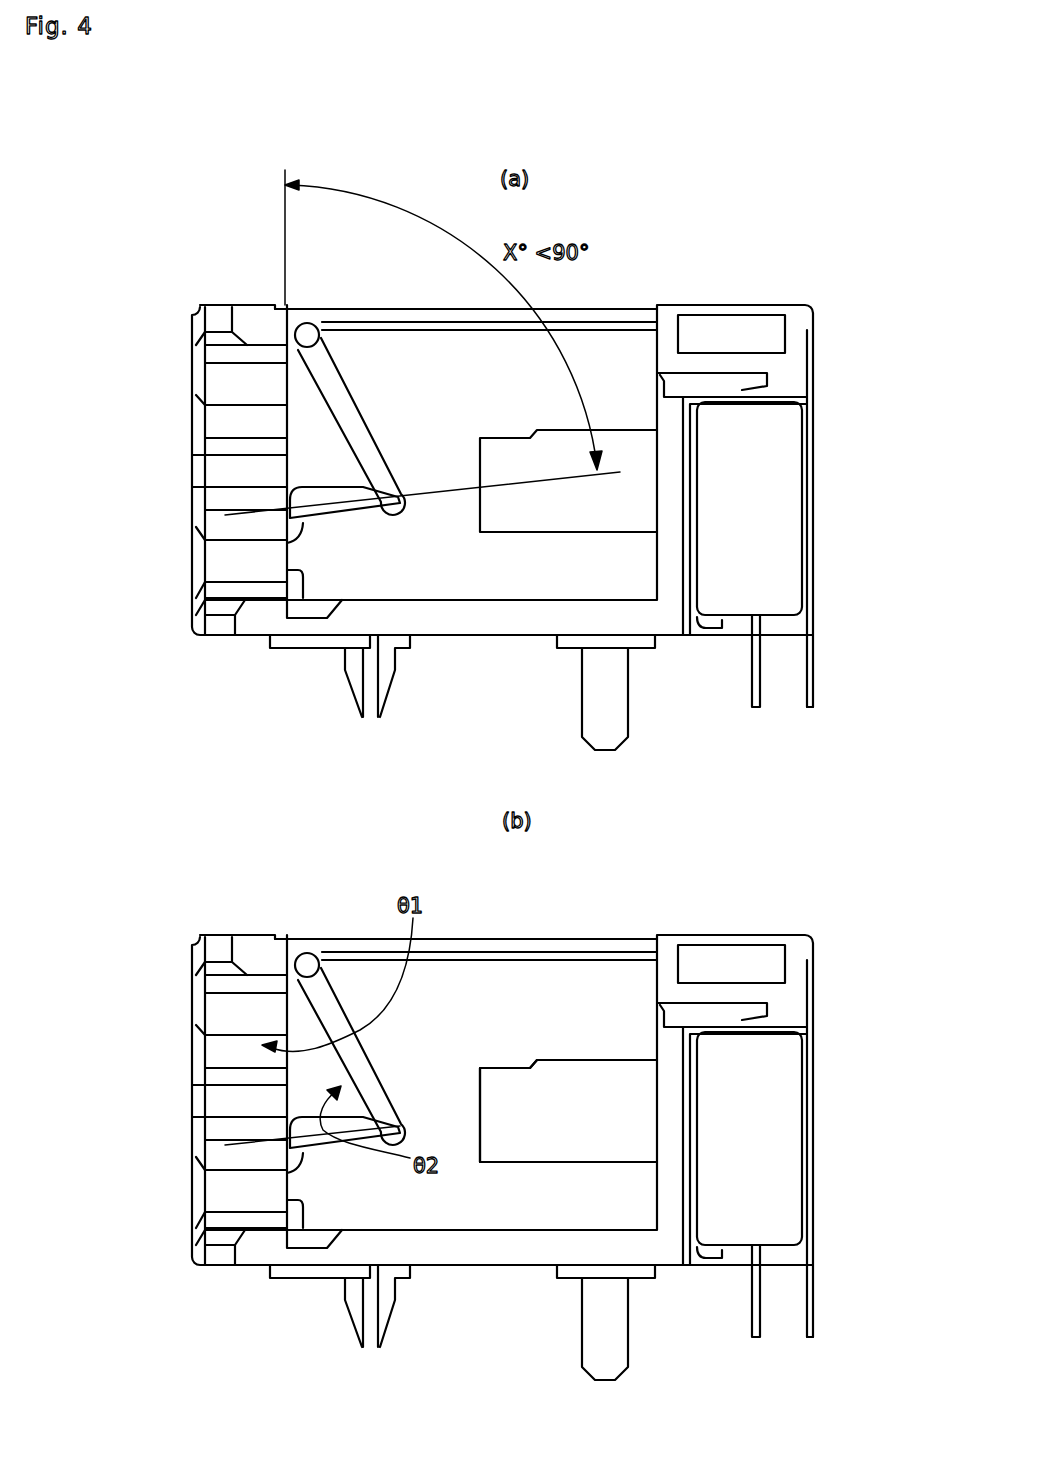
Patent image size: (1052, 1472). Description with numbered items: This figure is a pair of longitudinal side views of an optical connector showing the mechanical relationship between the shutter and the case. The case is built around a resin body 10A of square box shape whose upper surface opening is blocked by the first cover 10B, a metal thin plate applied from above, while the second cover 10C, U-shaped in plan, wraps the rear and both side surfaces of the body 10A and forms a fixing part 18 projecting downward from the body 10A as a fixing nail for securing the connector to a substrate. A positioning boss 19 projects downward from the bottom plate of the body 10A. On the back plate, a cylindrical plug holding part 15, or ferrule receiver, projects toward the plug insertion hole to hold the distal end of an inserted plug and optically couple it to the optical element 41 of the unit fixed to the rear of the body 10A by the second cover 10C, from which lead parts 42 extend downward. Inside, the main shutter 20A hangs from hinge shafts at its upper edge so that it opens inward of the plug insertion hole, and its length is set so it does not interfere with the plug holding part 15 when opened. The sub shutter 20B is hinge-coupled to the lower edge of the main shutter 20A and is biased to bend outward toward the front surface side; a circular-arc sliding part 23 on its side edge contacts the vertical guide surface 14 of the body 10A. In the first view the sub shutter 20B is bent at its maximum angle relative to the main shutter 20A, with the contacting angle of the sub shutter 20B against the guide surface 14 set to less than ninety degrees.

The body 10A is at (615, 427).
The first cover 10B is at (620, 1060).
The second cover 10C is at (817, 505).
The vertical guide surface 14 is at (298, 517).
The plug holding part 15 is at (620, 307).
The fixing part 18 is at (383, 688).
The positioning boss 19 is at (620, 712).
The main shutter 20A is at (320, 370).
The sub shutter 20B is at (327, 517).
The sliding part 23 is at (300, 528).
The optical element 41 is at (777, 553).
The lead part 42 is at (760, 677).